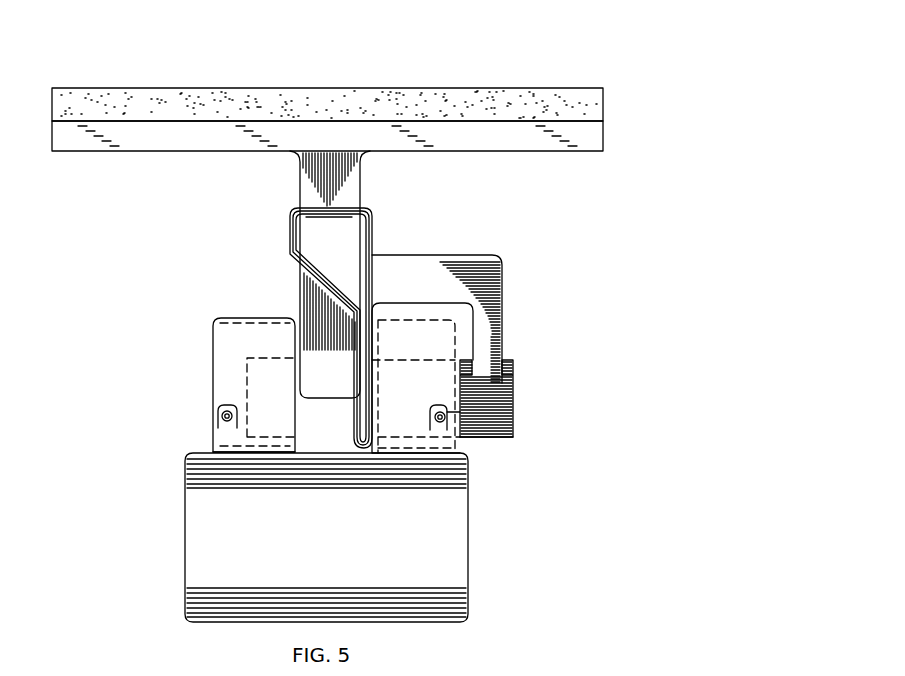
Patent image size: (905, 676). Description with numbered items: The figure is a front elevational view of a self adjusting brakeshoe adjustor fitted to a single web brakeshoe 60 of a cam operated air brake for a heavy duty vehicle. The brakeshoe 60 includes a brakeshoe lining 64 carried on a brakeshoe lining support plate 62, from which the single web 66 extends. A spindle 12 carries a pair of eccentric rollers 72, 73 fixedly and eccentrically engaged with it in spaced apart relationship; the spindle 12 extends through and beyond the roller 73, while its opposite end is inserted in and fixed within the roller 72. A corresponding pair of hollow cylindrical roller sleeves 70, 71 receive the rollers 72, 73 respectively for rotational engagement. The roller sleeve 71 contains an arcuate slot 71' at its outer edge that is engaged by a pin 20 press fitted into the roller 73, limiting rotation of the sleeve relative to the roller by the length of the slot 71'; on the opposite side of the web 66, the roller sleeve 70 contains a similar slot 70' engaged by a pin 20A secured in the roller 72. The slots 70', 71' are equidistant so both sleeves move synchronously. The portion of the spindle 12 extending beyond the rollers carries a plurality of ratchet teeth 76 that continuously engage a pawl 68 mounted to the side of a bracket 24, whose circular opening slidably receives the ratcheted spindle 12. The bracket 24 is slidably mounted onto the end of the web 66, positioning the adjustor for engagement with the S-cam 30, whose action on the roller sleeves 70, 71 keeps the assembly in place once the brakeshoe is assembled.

The brakeshoe 60 is at (330, 72).
The brakeshoe lining 64 is at (241, 96).
The brakeshoe lining support plate 62 is at (590, 152).
The web 66 is at (302, 180).
The bracket 24 is at (306, 232).
The pawl 68 is at (488, 266).
The roller sleeve 70 is at (251, 366).
The roller sleeve 71 is at (422, 367).
The eccentric roller 72 is at (232, 330).
The spindle 12 is at (246, 386).
The pin 20A is at (221, 419).
The slot 70' is at (202, 456).
The S-cam 30 is at (190, 512).
The pin 20 is at (437, 418).
The eccentric roller 73 is at (432, 328).
The slot 71' is at (518, 398).
The ratchet teeth 76 is at (508, 424).